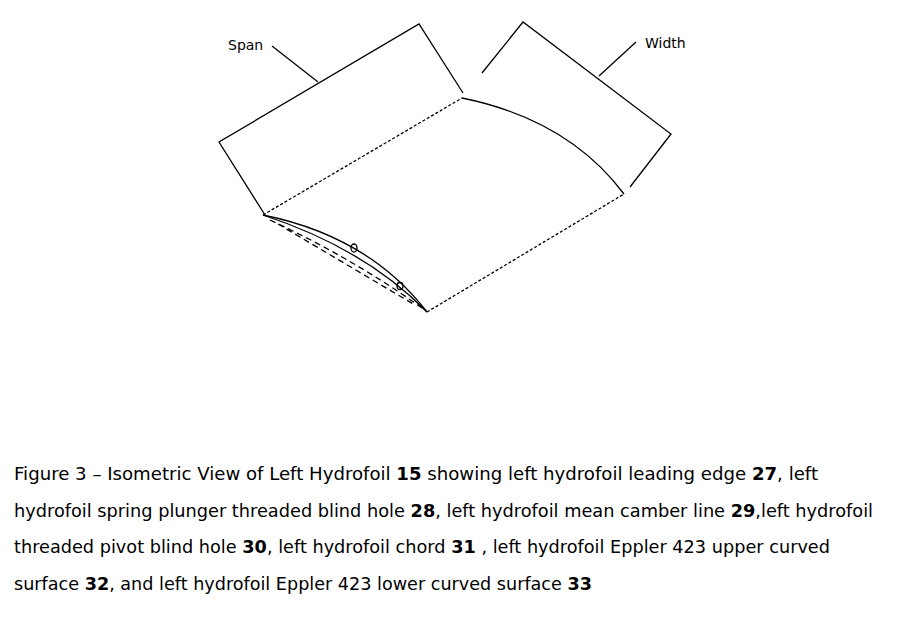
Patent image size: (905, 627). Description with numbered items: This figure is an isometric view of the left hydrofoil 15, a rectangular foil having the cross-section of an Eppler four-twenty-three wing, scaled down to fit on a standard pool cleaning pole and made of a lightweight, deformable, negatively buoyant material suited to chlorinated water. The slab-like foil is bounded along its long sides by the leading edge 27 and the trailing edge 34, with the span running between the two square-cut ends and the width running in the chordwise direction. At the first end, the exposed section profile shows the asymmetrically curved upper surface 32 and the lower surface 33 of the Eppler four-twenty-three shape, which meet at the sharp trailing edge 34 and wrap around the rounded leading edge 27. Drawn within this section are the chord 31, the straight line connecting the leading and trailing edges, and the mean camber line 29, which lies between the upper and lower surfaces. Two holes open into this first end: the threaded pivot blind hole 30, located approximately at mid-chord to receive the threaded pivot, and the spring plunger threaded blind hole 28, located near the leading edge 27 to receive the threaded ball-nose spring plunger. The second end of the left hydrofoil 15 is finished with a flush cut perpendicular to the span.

The left hydrofoil 15 is at (445, 253).
The left hydrofoil leading edge 27 is at (477, 282).
The left hydrofoil spring plunger threaded blind hole 28 is at (400, 289).
The left hydrofoil mean camber line 29 is at (379, 272).
The left hydrofoil threaded pivot blind hole 30 is at (353, 252).
The left hydrofoil chord 31 is at (327, 252).
The left hydrofoil Eppler 423 upper curved surface 32 is at (322, 236).
The left hydrofoil Eppler 423 lower curved surface 33 is at (297, 232).
The left hydrofoil trailing edge 34 is at (367, 155).